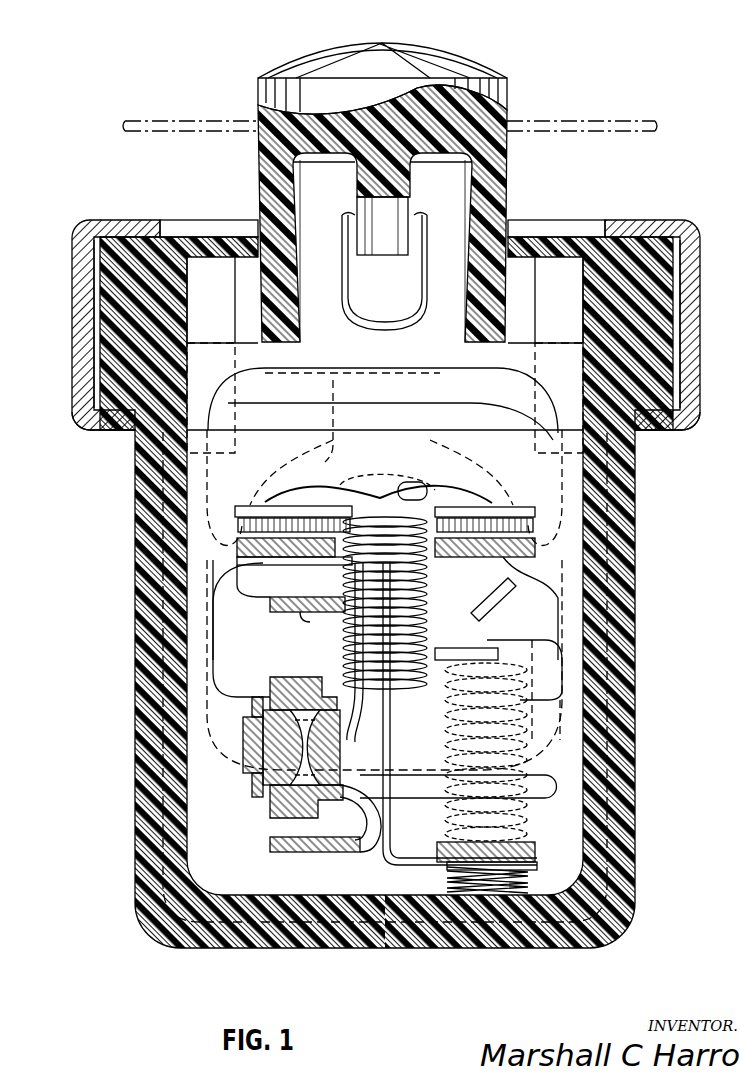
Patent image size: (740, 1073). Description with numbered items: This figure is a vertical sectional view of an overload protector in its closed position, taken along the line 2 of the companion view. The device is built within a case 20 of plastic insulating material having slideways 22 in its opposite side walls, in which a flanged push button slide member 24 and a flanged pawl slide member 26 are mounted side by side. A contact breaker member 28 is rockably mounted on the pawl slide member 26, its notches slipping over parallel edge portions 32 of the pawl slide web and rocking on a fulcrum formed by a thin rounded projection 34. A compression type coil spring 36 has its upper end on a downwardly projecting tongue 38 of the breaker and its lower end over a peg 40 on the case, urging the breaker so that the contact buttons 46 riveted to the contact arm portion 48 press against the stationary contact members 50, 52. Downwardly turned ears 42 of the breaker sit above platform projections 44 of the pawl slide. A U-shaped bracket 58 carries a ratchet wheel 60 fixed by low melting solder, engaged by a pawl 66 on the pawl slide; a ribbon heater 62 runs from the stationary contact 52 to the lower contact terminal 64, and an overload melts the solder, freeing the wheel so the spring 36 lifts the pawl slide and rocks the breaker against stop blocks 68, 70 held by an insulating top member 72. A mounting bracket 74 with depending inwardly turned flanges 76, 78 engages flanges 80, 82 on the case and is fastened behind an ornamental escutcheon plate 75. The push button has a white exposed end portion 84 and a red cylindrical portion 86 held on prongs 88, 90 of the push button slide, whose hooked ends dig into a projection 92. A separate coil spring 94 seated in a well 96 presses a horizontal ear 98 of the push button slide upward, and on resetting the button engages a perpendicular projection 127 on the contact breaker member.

The line 2—2 section 2 is at (398, 15).
The case 20 is at (636, 565).
The slideways 22 is at (196, 870).
The push button slide member 24 is at (547, 350).
The pawl slide member 26 is at (492, 442).
The contact breaker member 28 is at (272, 470).
The parallel edge portions 32 is at (282, 502).
The thin rounded projection 34 is at (402, 502).
The compression type coil spring 36 is at (426, 624).
The downwardly projecting tongue 38 is at (468, 553).
The peg 40 is at (340, 653).
The downwardly turned ears 42 is at (205, 600).
The platform projections 44 is at (190, 641).
The contact buttons 46 is at (238, 536).
The contact arm portion 48 is at (483, 510).
The stationary contact member 50 is at (468, 577).
The stationary contact member 52 is at (237, 562).
The U-shaped bracket 58 is at (300, 613).
The ratchet wheel 60 is at (270, 685).
The ribbon heater 62 is at (385, 860).
The lower contact terminal 64 is at (538, 850).
The pawl 66 is at (262, 828).
The stop block 68 is at (560, 275).
The stop block 70 is at (200, 277).
The top member 72 is at (244, 240).
The mounting bracket 74 is at (714, 211).
The ornamental escutcheon plate 75 is at (185, 120).
The depending inwardly turned flange 76 is at (130, 432).
The depending inwardly turned flange 78 is at (660, 430).
The flange 80 is at (98, 336).
The flange 82 is at (676, 327).
The exposed end portion 84 is at (455, 66).
The cylindrical portion 86 is at (505, 180).
The prong 88 is at (318, 190).
The prong 90 is at (455, 190).
The projection 92 is at (383, 265).
The coil spring 94 is at (520, 756).
The well 96 is at (600, 873).
The horizontal ear 98 is at (575, 670).
The perpendicular projection 127 is at (331, 389).